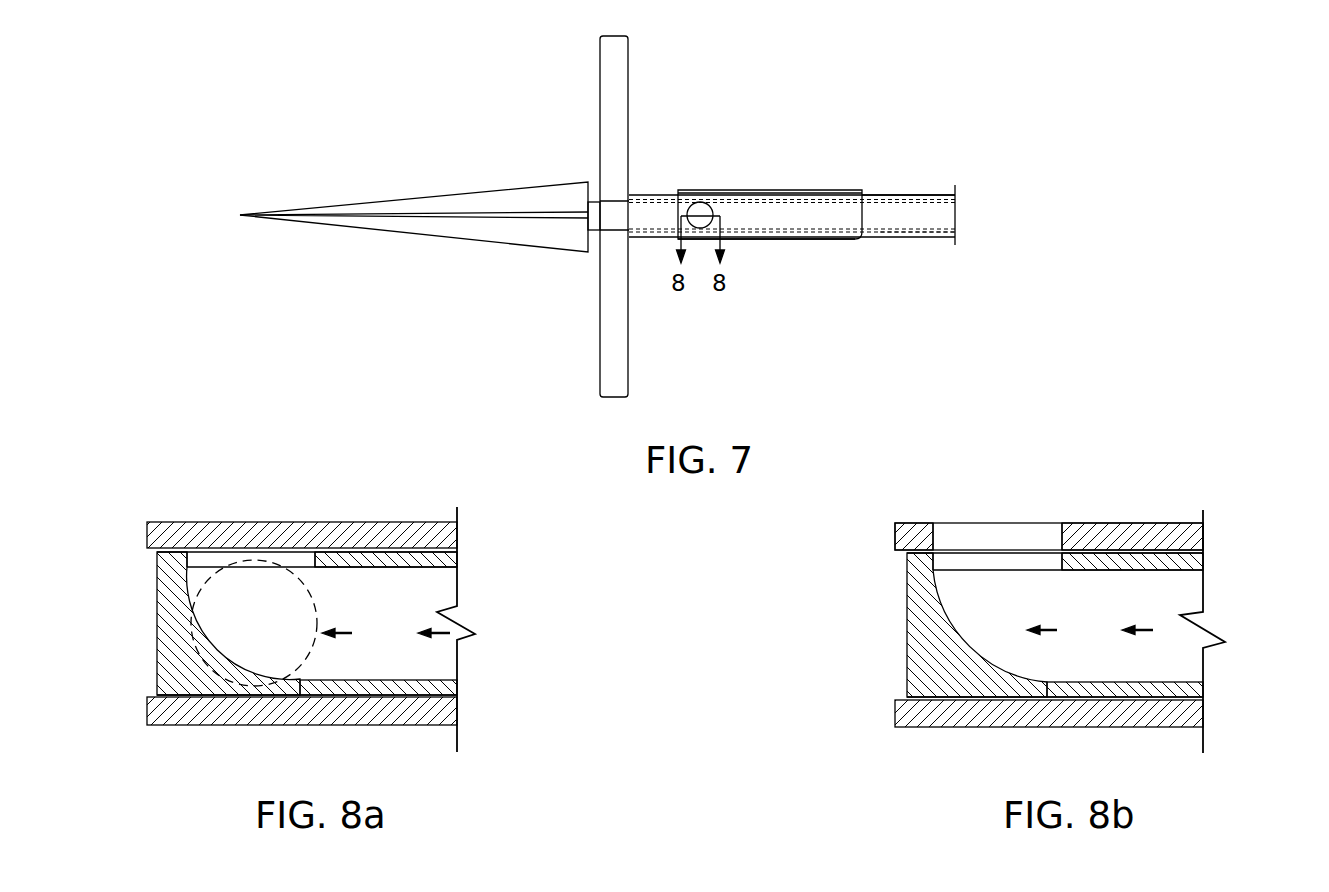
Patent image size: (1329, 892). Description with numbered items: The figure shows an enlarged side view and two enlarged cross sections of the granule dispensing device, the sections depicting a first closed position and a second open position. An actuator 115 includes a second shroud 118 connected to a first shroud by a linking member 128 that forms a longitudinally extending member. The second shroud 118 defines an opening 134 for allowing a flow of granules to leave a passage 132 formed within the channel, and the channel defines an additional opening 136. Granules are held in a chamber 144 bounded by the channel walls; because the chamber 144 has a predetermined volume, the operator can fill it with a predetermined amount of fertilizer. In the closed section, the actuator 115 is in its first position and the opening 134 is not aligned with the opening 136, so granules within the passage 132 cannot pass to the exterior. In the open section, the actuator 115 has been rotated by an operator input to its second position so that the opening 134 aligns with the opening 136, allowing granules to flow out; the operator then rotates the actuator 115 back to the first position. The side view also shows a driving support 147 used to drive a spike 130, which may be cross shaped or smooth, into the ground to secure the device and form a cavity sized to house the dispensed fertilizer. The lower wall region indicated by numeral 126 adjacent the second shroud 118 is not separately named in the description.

In FIG. 7, the actuator 115 is at (925, 183).
In FIG. 7, the second shroud 118 is at (798, 219).
In FIG. 8a, the second shroud 118 is at (372, 530).
In FIG. 8b, the second shroud 118 is at (1148, 538).
In FIG. 7, the sleeve body 126 is at (776, 248).
In FIG. 7, the linking member 128 is at (905, 234).
In FIG. 7, the spike 130 is at (415, 208).
In FIG. 7, the passage 132 is at (932, 227).
In FIG. 8a, the passage 132 is at (408, 647).
In FIG. 8b, the passage 132 is at (1113, 643).
In FIG. 7, the opening 134 is at (702, 205).
In FIG. 8a, the opening 134 is at (196, 633).
In FIG. 8b, the opening 134 is at (980, 569).
In FIG. 8a, the additional opening 136 is at (286, 562).
In FIG. 8b, the additional opening 136 is at (987, 530).
In FIG. 7, the chamber 144 is at (945, 223).
In FIG. 8a, the chamber 144 is at (442, 660).
In FIG. 8b, the chamber 144 is at (1182, 658).
In FIG. 7, the driving support 147 is at (610, 133).